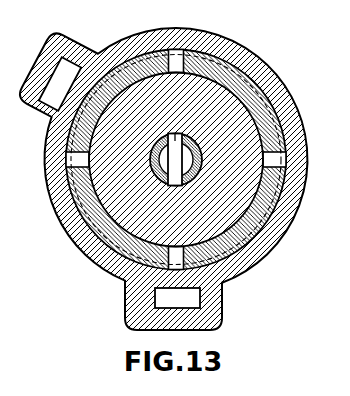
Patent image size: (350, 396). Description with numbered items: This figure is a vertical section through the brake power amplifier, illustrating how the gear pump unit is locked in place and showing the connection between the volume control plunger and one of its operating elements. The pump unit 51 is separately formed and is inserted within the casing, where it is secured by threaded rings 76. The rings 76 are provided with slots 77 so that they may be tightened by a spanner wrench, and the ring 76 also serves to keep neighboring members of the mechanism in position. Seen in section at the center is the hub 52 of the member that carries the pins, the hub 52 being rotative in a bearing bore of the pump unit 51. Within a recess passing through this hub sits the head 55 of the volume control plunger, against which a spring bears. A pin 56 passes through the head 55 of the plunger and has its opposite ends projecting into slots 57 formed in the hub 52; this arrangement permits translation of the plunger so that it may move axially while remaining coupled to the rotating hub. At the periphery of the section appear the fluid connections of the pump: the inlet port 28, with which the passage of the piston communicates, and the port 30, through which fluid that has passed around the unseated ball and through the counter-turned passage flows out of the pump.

The inlet port 28 is at (60, 84).
The port 30 is at (177, 298).
The pump unit 51 is at (159, 172).
The hub 52 is at (201, 154).
The head of the volume control plunger 55 is at (197, 178).
The pin 56 is at (183, 133).
The slots 57 is at (283, 91).
The threaded rings 76 is at (262, 224).
The slots 77 is at (47, 195).